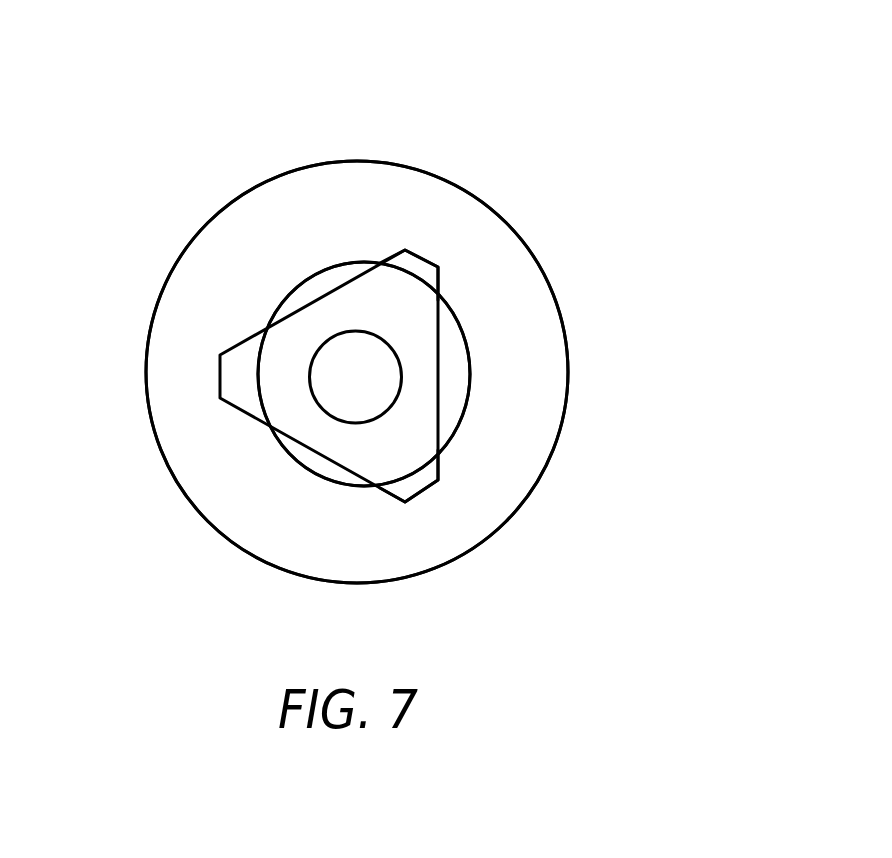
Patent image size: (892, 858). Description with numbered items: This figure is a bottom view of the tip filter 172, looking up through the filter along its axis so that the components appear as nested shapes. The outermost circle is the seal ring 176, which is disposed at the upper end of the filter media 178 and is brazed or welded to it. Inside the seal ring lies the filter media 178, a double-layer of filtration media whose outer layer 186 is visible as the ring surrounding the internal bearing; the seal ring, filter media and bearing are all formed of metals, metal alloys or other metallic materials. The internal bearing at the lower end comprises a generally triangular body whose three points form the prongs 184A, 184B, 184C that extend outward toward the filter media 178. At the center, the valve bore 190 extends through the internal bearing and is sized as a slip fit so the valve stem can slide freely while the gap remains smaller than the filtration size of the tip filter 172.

The tip filter 172 is at (600, 158).
The seal ring 176 is at (557, 340).
The filter media 178 is at (478, 330).
The outer layer 186 is at (463, 387).
The prong 184A is at (230, 382).
The prong 184B is at (415, 481).
The prong 184C is at (431, 274).
The valve bore 190 is at (310, 366).